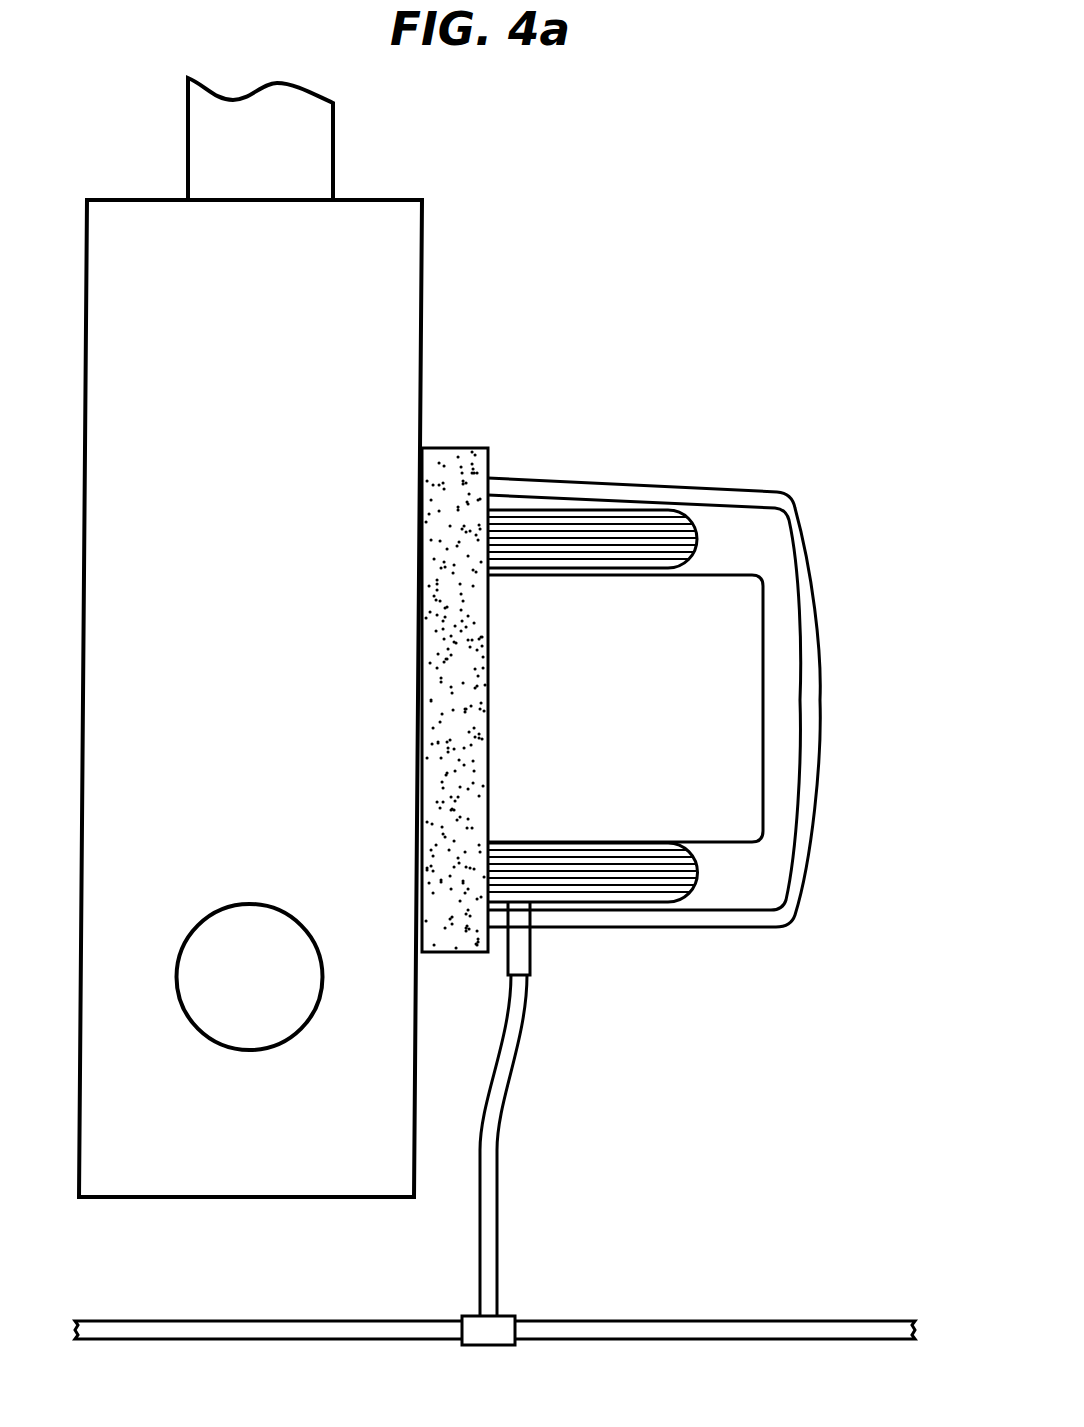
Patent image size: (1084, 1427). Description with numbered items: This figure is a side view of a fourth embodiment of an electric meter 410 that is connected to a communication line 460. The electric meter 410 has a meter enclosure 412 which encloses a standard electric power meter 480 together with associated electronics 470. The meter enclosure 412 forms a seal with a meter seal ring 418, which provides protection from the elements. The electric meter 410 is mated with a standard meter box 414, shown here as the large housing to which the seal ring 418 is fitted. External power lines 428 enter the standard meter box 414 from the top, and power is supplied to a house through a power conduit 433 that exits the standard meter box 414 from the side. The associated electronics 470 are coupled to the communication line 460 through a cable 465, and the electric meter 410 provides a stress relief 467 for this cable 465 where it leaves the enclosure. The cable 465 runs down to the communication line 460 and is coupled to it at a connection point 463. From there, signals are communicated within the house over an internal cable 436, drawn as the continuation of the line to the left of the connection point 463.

The electric meter 410 is at (758, 522).
The meter enclosure 412 is at (800, 545).
The standard meter box 414 is at (425, 296).
The meter seal ring 418 is at (470, 467).
The external power lines 428 is at (333, 142).
The power conduit 433 is at (227, 1016).
The internal cable 436 is at (209, 1330).
The communication line 460 is at (791, 1332).
The connection point 463 is at (500, 1330).
The cable 465 is at (503, 1092).
The stress relief 467 is at (532, 950).
The associated electronics 470 is at (553, 550).
The standard electric power meter 480 is at (745, 710).